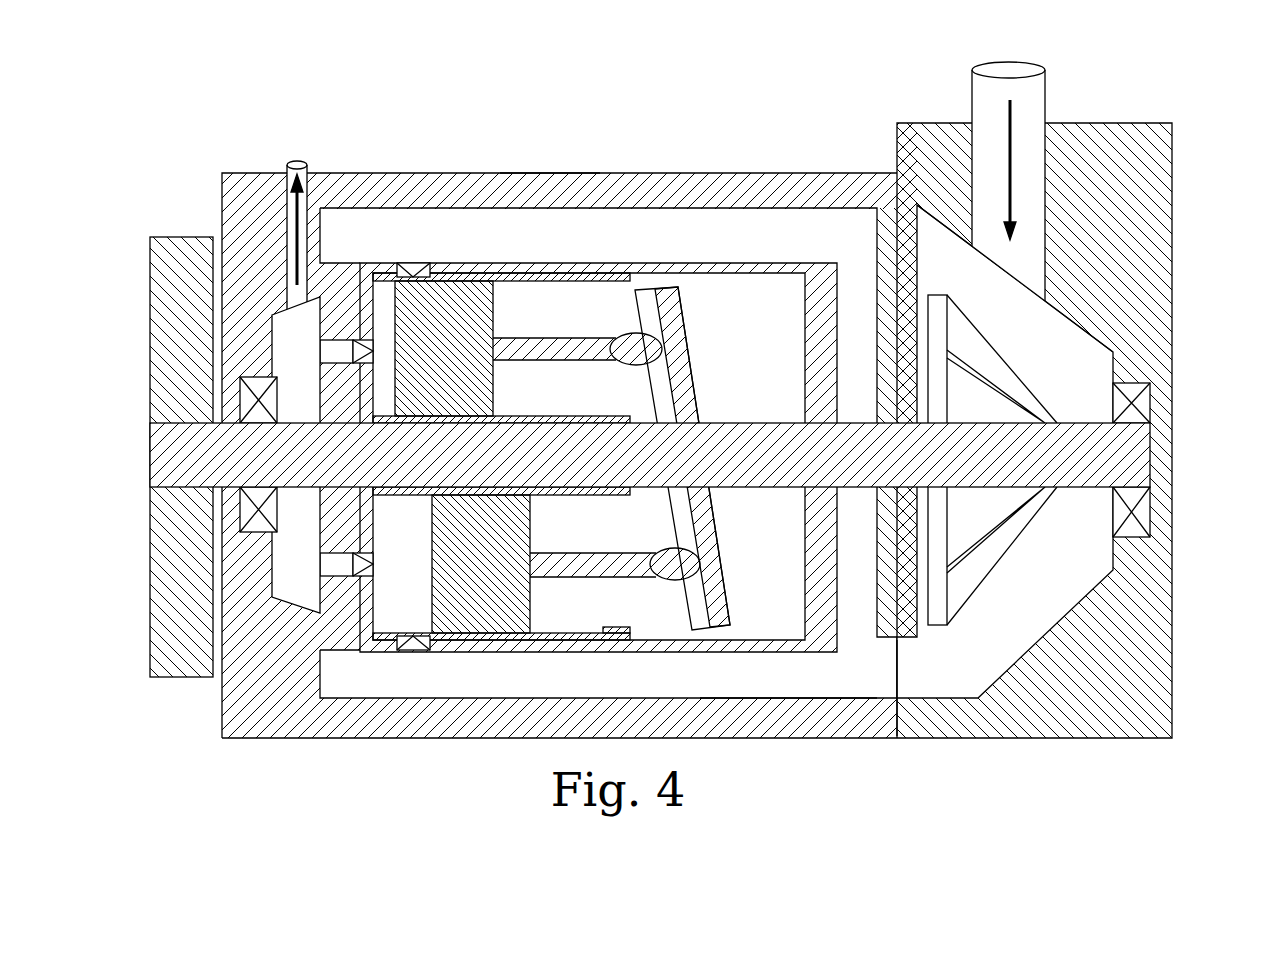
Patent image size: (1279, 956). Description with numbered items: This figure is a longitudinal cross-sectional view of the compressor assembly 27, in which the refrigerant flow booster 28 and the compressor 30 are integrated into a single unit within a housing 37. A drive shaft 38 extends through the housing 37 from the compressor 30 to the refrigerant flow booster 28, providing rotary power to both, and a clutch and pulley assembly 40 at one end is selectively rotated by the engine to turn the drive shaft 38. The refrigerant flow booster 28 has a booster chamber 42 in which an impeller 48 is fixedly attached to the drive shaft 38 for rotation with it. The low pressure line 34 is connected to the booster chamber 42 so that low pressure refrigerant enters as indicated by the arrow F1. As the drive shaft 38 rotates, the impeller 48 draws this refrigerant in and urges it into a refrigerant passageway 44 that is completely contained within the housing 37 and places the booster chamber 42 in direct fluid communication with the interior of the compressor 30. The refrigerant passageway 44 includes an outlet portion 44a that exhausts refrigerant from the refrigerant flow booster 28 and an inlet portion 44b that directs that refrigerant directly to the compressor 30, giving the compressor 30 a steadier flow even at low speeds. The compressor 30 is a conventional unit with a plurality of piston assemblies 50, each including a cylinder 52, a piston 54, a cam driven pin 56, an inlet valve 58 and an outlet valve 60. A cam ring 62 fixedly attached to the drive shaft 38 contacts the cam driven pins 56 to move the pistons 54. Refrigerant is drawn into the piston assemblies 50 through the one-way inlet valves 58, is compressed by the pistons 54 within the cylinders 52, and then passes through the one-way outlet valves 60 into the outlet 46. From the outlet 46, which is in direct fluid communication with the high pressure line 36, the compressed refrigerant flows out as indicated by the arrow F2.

The compressor assembly 27 is at (697, 396).
The refrigerant flow booster 28 is at (958, 404).
The compressor 30 is at (590, 177).
The low pressure line 34 is at (1045, 100).
The high pressure line 36 is at (308, 164).
The housing 37 is at (546, 178).
The drive shaft 38 is at (722, 428).
The clutch and pulley assembly 40 is at (160, 247).
The booster chamber 42 is at (1065, 370).
The refrigerant passageway 44 is at (810, 729).
The outlet portion 44a is at (920, 670).
The inlet portion 44b is at (788, 726).
The outlet 46 is at (290, 352).
The impeller 48 is at (1005, 537).
The piston assemblies 50 is at (552, 262).
The cylinder 52 is at (541, 282).
The piston 54 is at (480, 393).
The cam driven pin 56 is at (572, 356).
The inlet valve 58 is at (413, 264).
The outlet valve 60 is at (356, 348).
The cam ring 62 is at (708, 542).
The arrow F1 is at (1008, 118).
The arrow F2 is at (272, 183).